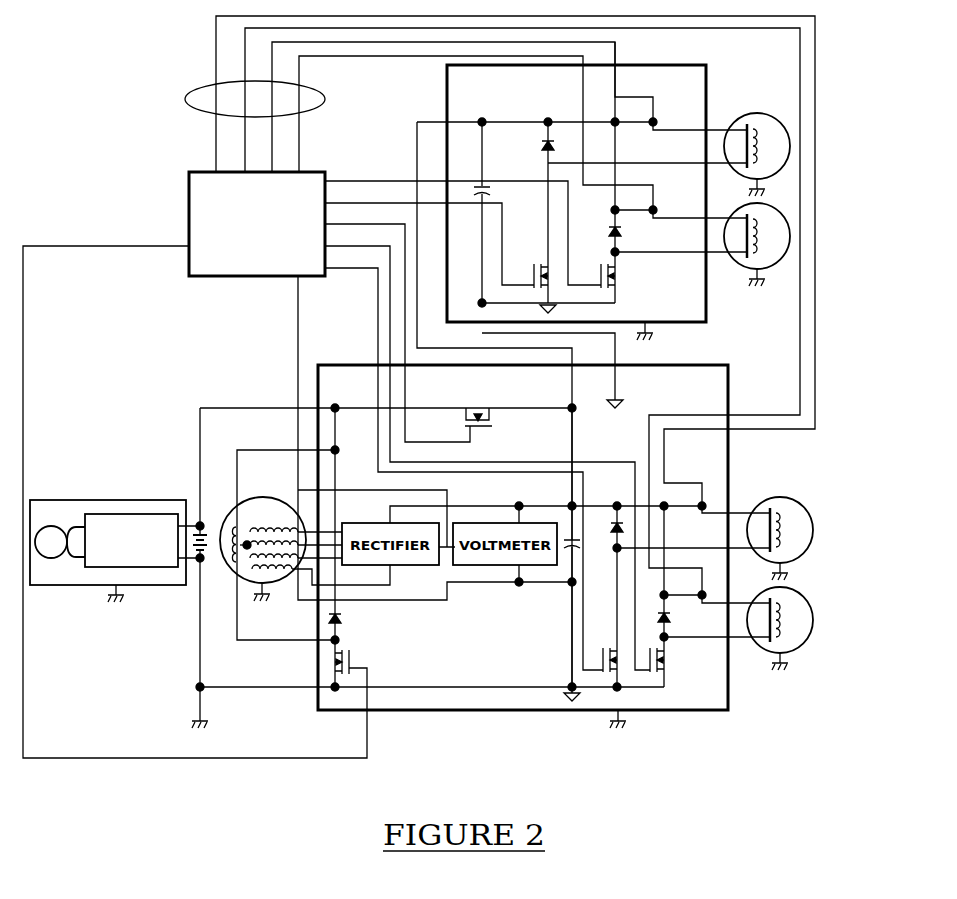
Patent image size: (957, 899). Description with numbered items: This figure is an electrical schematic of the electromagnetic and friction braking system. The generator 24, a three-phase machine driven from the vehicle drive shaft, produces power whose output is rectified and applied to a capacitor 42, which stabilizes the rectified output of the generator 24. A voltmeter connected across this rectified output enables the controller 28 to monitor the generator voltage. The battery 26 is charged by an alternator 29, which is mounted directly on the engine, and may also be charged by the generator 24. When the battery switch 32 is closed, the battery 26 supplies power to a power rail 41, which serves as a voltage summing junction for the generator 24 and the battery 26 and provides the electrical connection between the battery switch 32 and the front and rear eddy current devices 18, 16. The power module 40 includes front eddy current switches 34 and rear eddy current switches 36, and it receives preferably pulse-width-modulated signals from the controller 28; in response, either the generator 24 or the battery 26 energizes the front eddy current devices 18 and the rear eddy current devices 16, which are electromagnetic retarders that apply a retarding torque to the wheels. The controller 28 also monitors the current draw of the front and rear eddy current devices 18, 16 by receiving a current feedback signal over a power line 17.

The rear eddy current devices 16 is at (800, 497).
The power line 17 is at (185, 99).
The front eddy current devices 18 is at (776, 113).
The generator 24 is at (236, 511).
The battery 26 is at (211, 552).
The controller 28 is at (189, 193).
The alternator 29 is at (108, 499).
The battery switch 32 is at (493, 427).
The front eddy current switches 34 is at (550, 283).
The rear eddy current switches 36 is at (619, 670).
The power module 40 is at (713, 333).
The power rail 41 is at (417, 163).
The capacitor 42 is at (568, 548).